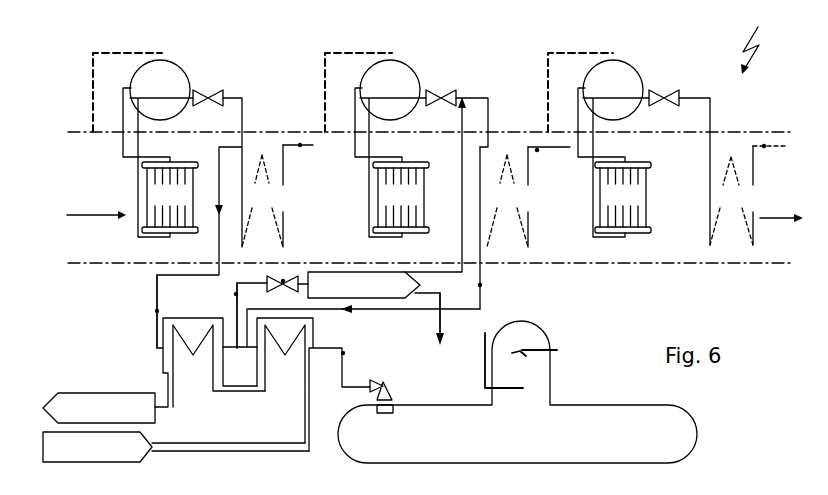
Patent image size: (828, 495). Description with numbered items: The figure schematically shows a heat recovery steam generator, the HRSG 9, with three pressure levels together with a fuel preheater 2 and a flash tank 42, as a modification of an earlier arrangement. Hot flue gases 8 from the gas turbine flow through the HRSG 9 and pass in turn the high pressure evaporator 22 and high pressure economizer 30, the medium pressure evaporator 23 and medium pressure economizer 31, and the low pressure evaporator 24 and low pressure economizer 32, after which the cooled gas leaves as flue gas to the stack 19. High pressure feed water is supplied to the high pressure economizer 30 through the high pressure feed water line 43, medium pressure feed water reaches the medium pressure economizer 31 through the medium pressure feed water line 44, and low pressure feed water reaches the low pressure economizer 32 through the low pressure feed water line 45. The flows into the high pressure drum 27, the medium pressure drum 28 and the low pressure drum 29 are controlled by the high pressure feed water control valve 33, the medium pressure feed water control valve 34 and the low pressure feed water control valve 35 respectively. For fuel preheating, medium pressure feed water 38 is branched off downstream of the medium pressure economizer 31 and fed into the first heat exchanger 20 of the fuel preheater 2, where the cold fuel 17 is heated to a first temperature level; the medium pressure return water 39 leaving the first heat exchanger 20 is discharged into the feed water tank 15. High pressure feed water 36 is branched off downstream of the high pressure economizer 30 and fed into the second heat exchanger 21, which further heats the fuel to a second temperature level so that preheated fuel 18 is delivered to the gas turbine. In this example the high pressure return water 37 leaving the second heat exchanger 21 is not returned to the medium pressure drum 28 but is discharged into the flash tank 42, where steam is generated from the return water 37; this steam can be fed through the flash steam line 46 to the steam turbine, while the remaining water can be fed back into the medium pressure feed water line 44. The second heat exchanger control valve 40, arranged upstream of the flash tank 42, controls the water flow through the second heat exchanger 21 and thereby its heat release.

The fuel preheater 2 is at (237, 427).
The hot flue gases 8 is at (96, 202).
The HRSG 9 is at (762, 36).
The feed water tank 15 is at (517, 392).
The fuel 17 is at (176, 447).
The preheated fuel 18 is at (99, 408).
The flue gas to the stack 19 is at (781, 206).
The first heat exchanger 20 is at (313, 384).
The second heat exchanger 21 is at (210, 362).
The high pressure evaporator 22 is at (170, 197).
The medium pressure evaporator 23 is at (401, 197).
The low pressure evaporator 24 is at (623, 197).
The high pressure drum 27 is at (160, 90).
The medium pressure drum 28 is at (390, 90).
The low pressure drum 29 is at (613, 90).
The high pressure economizer 30 is at (262, 196).
The medium pressure economizer 31 is at (507, 197).
The low pressure economizer 32 is at (731, 195).
The high pressure feed water control valve 33 is at (210, 84).
The medium pressure feed water control valve 34 is at (442, 84).
The low pressure feed water control valve 35 is at (665, 84).
The high pressure feed water 36 is at (157, 311).
The high pressure return water 37 is at (236, 294).
The medium pressure feed water 38 is at (480, 285).
The medium pressure return water 39 is at (343, 353).
The second heat exchanger control valve 40 is at (285, 278).
The flash tank 42 is at (364, 285).
The high pressure feed water line 43 is at (300, 145).
The medium pressure feed water line 44 is at (537, 150).
The low pressure feed water line 45 is at (764, 146).
The flash steam line 46 is at (442, 331).